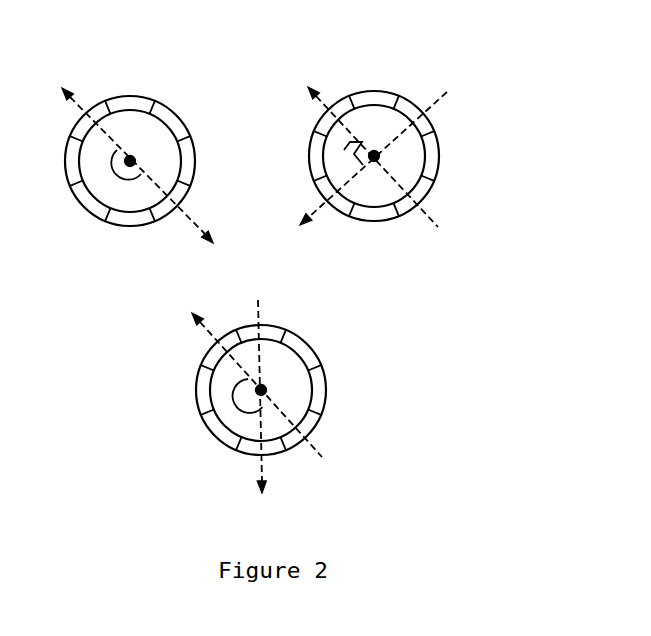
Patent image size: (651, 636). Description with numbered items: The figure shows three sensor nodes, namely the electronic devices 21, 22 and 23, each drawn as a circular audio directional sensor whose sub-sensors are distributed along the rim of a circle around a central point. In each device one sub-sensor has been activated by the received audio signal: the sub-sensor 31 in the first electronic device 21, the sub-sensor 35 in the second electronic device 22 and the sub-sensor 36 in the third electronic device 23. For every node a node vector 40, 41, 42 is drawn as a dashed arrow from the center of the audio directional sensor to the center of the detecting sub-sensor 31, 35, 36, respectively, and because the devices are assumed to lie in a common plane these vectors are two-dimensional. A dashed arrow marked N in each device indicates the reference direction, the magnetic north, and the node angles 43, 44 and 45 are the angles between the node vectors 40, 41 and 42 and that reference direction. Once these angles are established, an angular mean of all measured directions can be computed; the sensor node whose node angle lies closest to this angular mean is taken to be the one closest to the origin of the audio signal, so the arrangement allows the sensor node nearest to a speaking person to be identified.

The electronic device 21 is at (168, 90).
The electronic device 22 is at (452, 85).
The electronic device 23 is at (330, 345).
The sub-sensor 31 is at (183, 199).
The sub-sensor 35 is at (320, 193).
The sub-sensor 36 is at (252, 457).
The node vector 40 is at (187, 217).
The node vector 41 is at (317, 207).
The node vector 42 is at (267, 472).
The node angle 43 is at (117, 150).
The node angle 44 is at (345, 157).
The node angle 45 is at (248, 379).